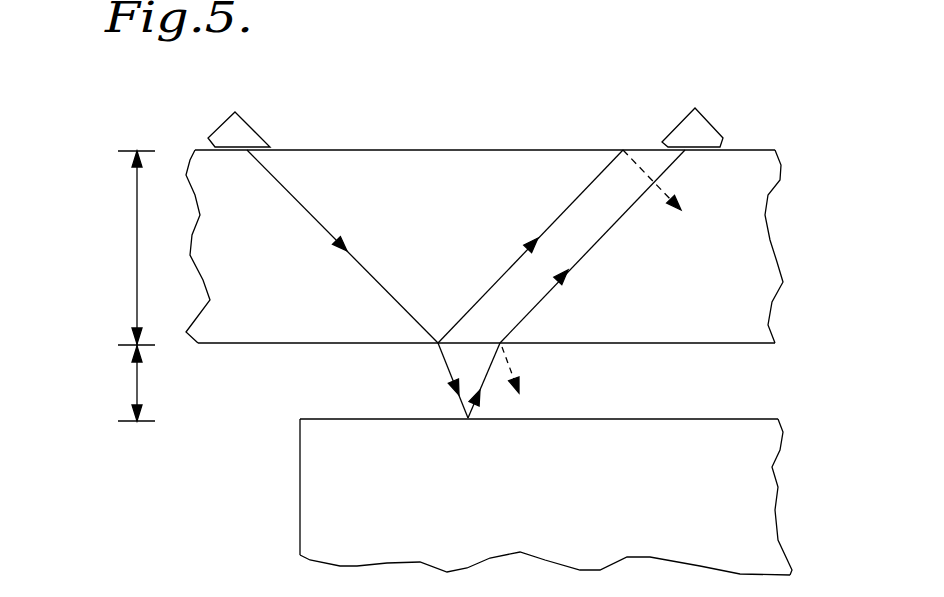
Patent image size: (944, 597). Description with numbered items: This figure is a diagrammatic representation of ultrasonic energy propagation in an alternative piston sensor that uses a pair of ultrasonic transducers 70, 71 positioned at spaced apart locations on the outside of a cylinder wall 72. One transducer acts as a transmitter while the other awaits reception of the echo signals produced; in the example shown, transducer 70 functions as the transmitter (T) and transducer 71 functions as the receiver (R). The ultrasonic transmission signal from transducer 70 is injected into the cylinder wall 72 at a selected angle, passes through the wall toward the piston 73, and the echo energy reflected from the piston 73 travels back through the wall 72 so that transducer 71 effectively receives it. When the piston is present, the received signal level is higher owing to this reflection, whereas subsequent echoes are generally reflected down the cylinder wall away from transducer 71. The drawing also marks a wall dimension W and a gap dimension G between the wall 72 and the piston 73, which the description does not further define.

The transducer 70 is at (254, 128).
The transducer 71 is at (672, 130).
The cylinder wall 72 is at (745, 205).
The piston 73 is at (305, 495).
The plate thickness W is at (137, 237).
The gap G is at (137, 382).